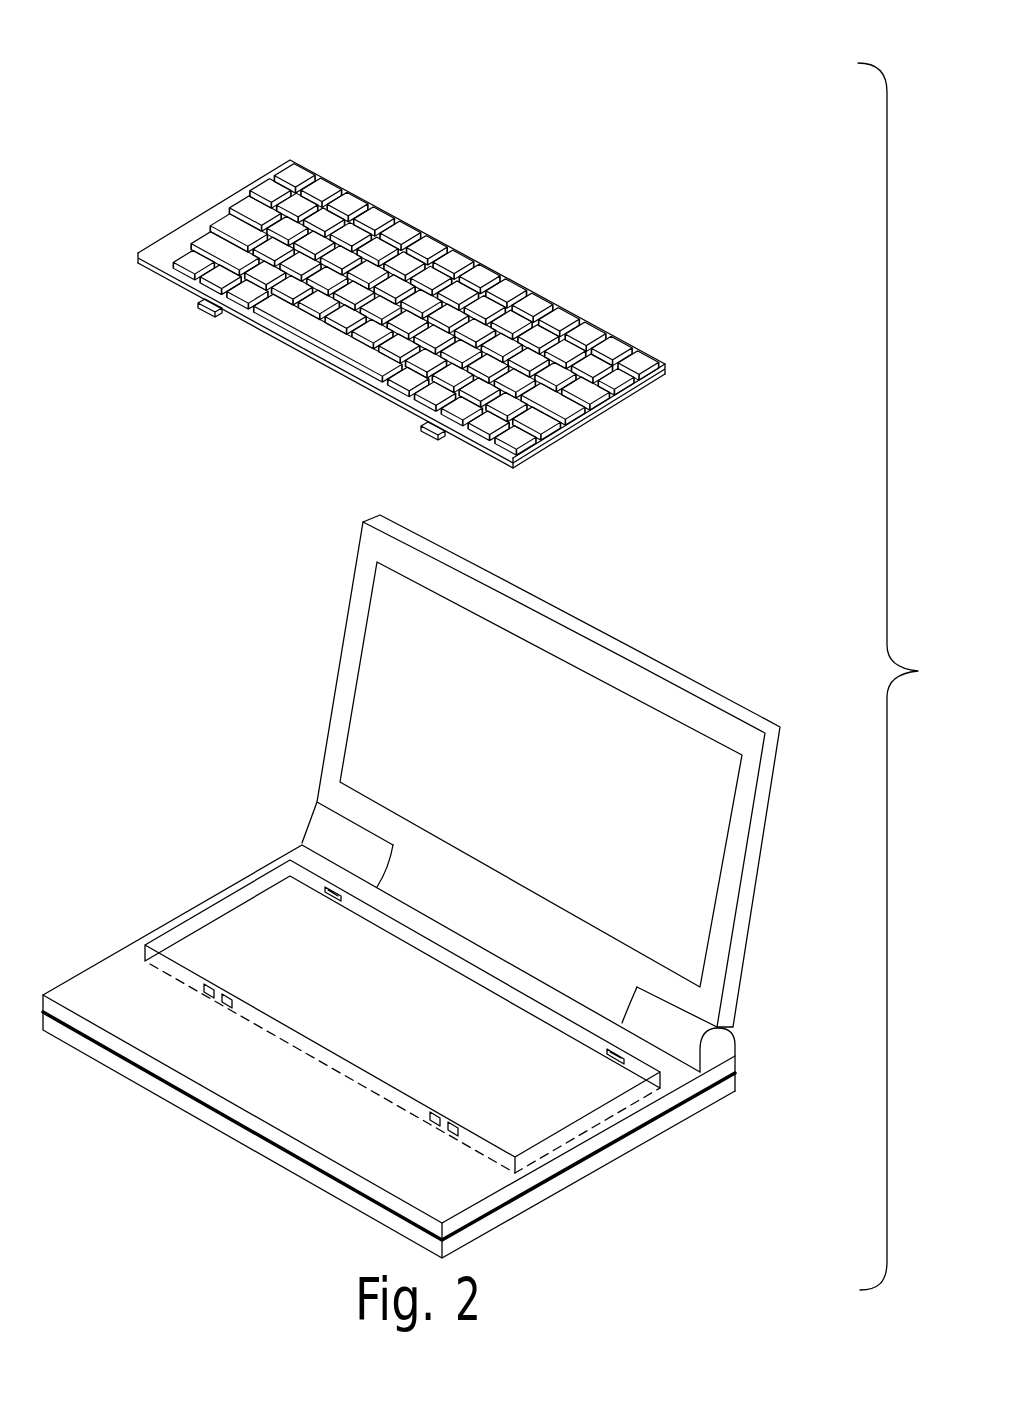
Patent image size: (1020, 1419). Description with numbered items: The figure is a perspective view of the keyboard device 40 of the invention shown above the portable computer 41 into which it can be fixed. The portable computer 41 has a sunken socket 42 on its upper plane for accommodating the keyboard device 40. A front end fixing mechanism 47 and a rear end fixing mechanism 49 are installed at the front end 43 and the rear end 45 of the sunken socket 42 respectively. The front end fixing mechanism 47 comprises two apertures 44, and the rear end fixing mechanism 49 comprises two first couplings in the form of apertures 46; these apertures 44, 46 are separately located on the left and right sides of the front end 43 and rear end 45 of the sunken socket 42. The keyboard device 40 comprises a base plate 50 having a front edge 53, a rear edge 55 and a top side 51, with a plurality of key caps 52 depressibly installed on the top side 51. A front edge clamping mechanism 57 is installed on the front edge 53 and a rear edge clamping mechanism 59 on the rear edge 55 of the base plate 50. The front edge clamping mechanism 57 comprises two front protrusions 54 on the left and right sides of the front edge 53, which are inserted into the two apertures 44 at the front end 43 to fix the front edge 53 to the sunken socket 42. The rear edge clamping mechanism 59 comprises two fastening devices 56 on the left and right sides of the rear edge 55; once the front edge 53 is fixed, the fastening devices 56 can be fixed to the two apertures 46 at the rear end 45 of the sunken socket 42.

The keyboard device 40 is at (491, 143).
The portable computer 41 is at (672, 605).
The sunken socket 42 is at (239, 937).
The front end 43 is at (305, 1058).
The apertures 44 is at (207, 987).
The rear end 45 is at (462, 960).
The apertures 46 is at (337, 887).
The front end fixing mechanism 47 is at (460, 1158).
The rear end fixing mechanism 49 is at (562, 1003).
The base plate 50 is at (588, 440).
The top side 51 is at (170, 256).
The key caps 52 is at (225, 218).
The front edge 53 is at (291, 348).
The front protrusions 54 is at (207, 303).
The rear edge 55 is at (460, 258).
The fastening devices 56 is at (312, 183).
The front edge clamping mechanism 57 is at (437, 462).
The rear edge clamping mechanism 59 is at (316, 158).